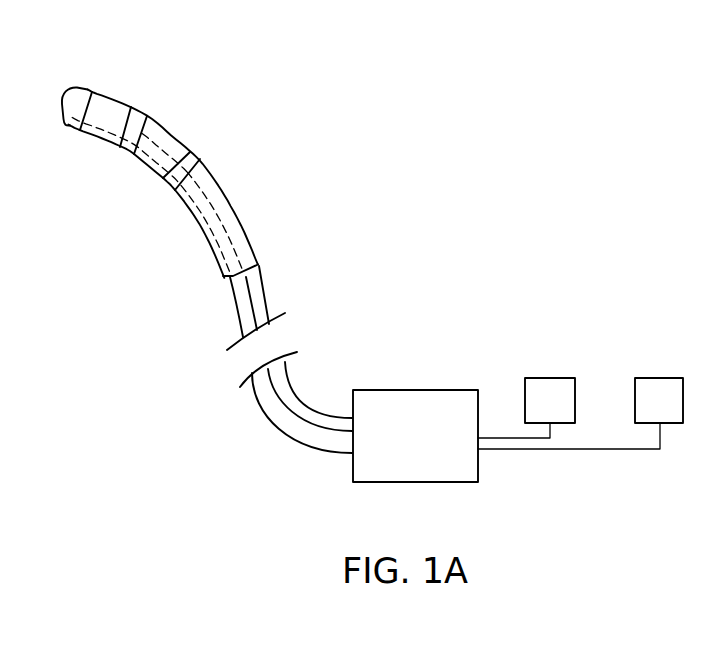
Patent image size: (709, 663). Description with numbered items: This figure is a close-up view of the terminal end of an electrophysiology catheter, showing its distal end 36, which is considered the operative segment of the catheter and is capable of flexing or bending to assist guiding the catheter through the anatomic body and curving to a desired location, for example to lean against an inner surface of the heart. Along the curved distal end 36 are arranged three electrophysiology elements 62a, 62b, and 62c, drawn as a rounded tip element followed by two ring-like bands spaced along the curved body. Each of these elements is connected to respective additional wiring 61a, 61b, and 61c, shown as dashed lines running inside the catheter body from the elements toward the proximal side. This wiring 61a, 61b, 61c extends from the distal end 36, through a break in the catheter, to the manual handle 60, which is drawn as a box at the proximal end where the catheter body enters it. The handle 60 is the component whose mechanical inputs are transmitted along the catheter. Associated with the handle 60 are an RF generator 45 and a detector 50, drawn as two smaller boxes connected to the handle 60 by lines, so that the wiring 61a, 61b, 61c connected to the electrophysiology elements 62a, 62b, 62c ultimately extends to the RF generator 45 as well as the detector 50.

The distal end 36 is at (254, 140).
The electrophysiology element 62a is at (81, 89).
The electrophysiology element 62b is at (143, 116).
The electrophysiology element 62c is at (193, 148).
The wiring 61a is at (100, 140).
The wiring 61b is at (158, 145).
The wiring 61c is at (238, 205).
The manual handle 60 is at (402, 443).
The RF generator 45 is at (538, 411).
The detector 50 is at (645, 411).